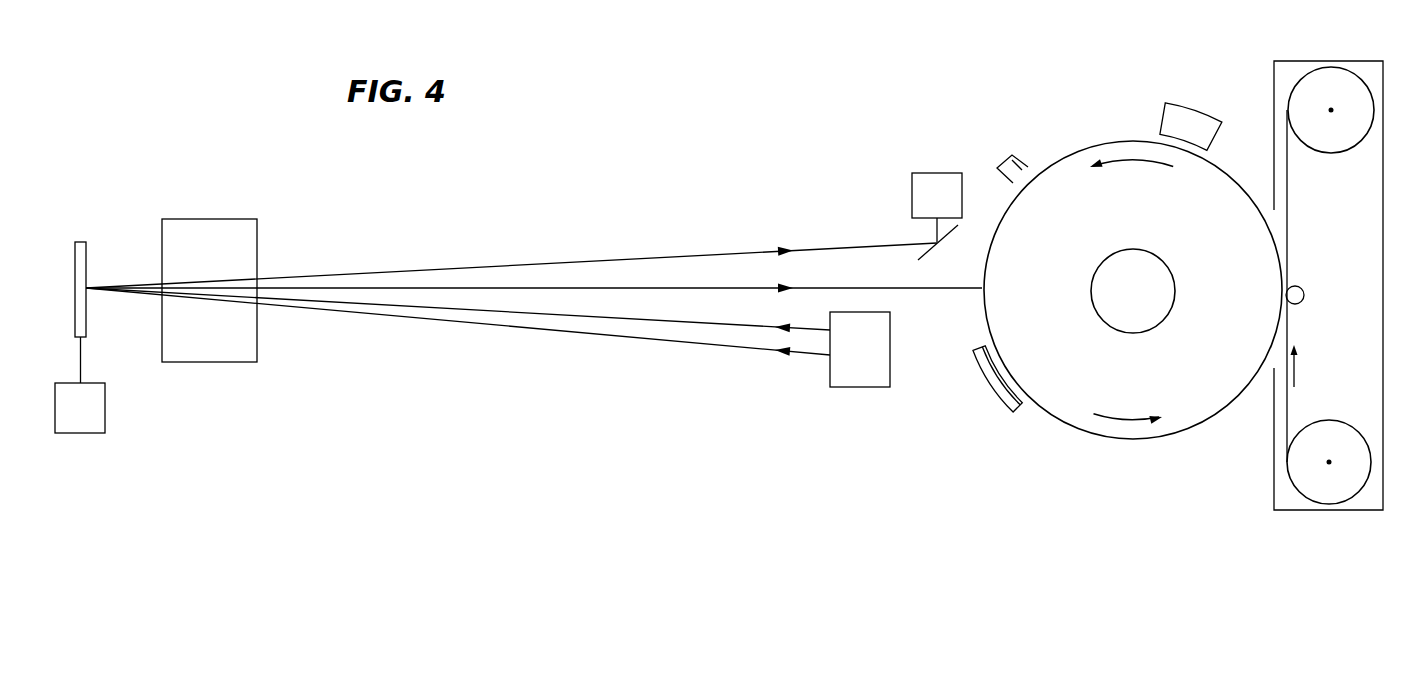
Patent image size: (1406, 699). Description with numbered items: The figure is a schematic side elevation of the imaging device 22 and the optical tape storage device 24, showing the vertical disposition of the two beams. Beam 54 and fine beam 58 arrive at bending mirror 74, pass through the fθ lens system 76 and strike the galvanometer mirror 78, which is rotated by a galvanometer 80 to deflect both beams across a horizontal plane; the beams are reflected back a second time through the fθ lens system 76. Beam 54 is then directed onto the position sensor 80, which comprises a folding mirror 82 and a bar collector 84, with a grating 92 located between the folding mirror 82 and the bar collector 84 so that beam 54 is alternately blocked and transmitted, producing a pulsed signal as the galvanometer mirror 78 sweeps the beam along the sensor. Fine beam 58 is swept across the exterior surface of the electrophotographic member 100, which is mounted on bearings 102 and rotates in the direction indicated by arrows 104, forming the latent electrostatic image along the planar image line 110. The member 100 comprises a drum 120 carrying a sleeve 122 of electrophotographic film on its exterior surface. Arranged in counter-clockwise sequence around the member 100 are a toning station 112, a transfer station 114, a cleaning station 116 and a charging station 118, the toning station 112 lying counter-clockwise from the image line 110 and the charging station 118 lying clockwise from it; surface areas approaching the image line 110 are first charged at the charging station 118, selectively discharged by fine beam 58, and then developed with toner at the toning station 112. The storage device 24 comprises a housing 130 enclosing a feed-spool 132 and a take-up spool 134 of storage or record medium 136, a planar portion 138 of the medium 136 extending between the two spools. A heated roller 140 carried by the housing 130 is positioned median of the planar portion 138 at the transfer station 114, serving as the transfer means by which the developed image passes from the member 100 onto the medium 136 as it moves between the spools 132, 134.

The imaging device 22 is at (575, 217).
The optical tape storage device 24 is at (1307, 46).
The beam 54 is at (690, 254).
The fine beam 58 is at (700, 292).
The bending mirror 74 is at (870, 388).
The fθ lens system 76 is at (257, 248).
The galvanometer mirror 78 is at (86, 257).
The position sensor 80 is at (105, 407).
The folding mirror 82 is at (937, 250).
The bar collector 84 is at (940, 173).
The grating 92 is at (922, 219).
The electrophotographic member 100 is at (1129, 445).
The bearings 102 is at (1137, 290).
The arrows 104 is at (1133, 162).
The image line 110 is at (987, 292).
The toning station 112 is at (992, 392).
The transfer station 114 is at (1284, 293).
The cleaning station 116 is at (1204, 114).
The charging station 118 is at (1015, 163).
The drum 120 is at (1045, 412).
The sleeve 122 is at (1062, 423).
The housing 130 is at (1273, 483).
The feed-spool 132 is at (1347, 400).
The take-up spool 134 is at (1320, 152).
The storage or record medium 136 is at (1350, 148).
The planar portion 138 is at (1301, 315).
The heated roller 140 is at (1299, 287).